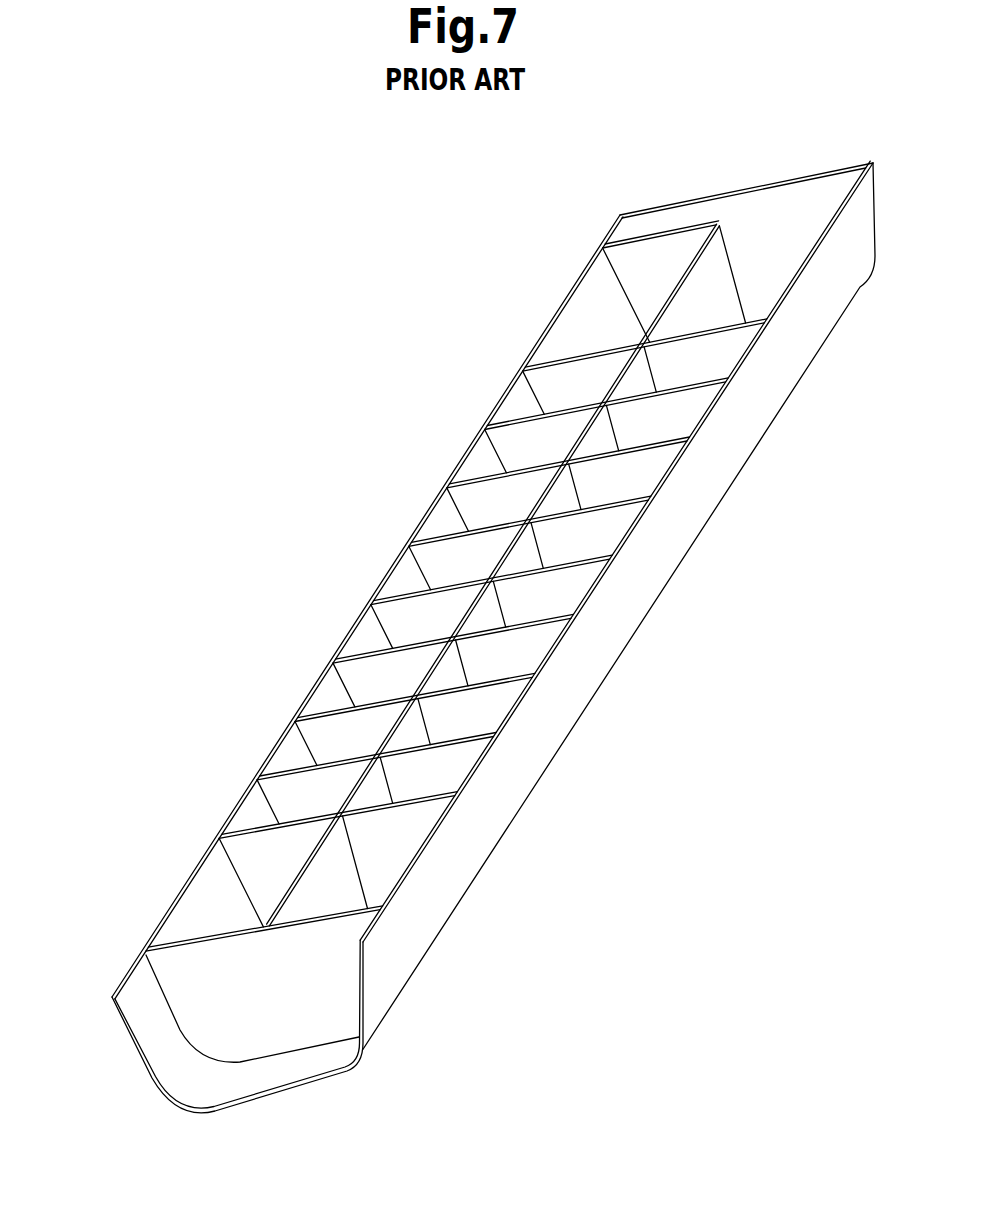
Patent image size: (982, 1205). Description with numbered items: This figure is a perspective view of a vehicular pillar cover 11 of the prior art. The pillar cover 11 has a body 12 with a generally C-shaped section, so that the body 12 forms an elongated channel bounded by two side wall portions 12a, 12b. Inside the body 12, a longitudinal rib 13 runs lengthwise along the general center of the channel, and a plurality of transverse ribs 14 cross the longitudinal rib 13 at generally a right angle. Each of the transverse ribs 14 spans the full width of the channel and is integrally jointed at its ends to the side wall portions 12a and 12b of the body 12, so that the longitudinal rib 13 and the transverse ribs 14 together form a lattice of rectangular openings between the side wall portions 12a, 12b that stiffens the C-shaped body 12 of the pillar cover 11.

The vehicular pillar cover 11 is at (791, 172).
The body 12 is at (137, 1100).
The side wall portion 12a is at (673, 513).
The side wall portion 12b is at (380, 582).
The longitudinal rib 13 is at (697, 250).
The transverse ribs 14 is at (576, 356).